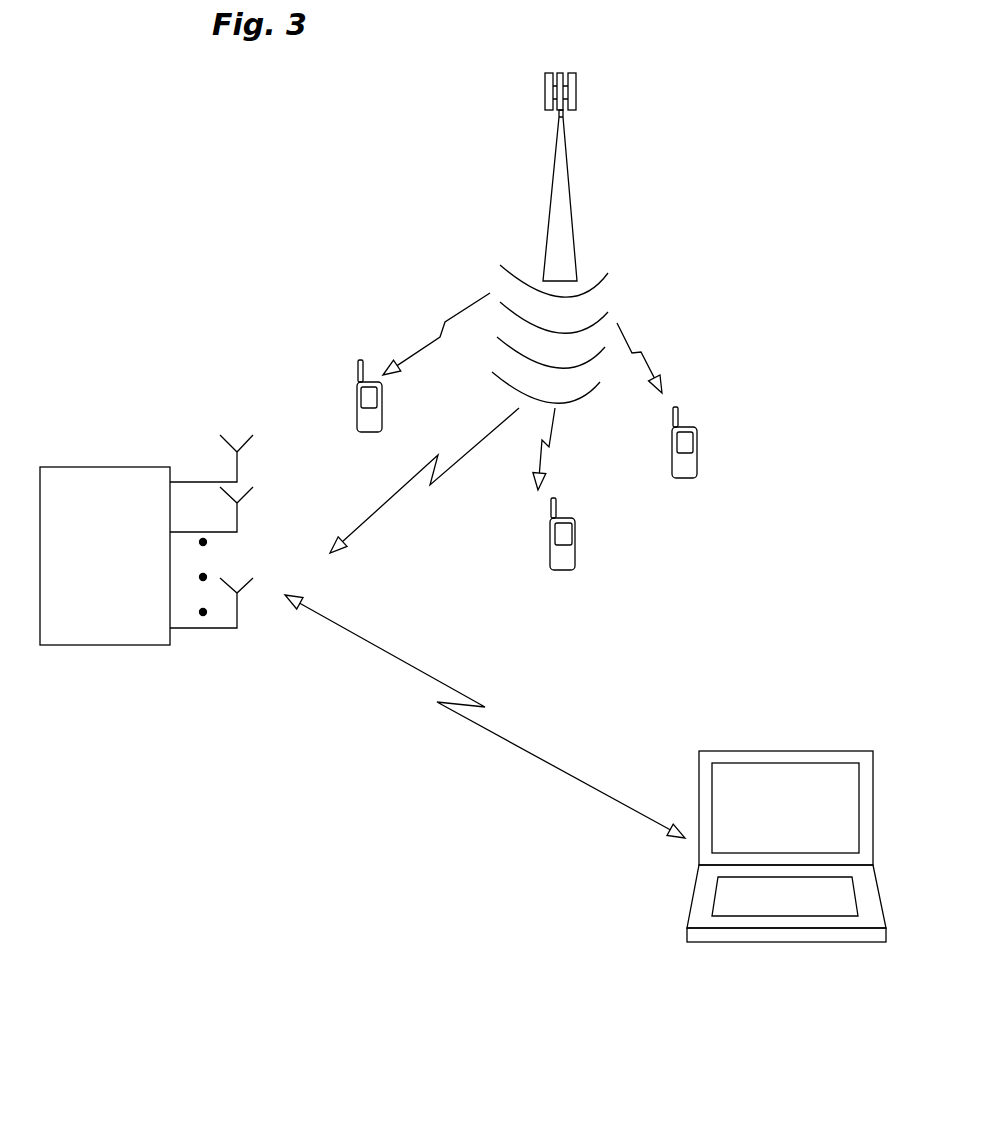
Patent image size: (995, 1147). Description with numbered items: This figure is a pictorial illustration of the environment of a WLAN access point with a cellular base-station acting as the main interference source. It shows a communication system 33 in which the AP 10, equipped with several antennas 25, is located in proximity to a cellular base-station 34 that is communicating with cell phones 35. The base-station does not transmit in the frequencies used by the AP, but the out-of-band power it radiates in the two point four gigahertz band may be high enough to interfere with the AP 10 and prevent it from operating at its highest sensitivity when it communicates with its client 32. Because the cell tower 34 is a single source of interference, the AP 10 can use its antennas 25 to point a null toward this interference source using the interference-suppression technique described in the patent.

The AP 10 is at (72, 642).
The antennas 25 is at (237, 465).
The client 32 is at (822, 942).
The communication system 33 is at (203, 348).
The cellular base-station 34 is at (565, 132).
The cell phones 35 is at (382, 405).